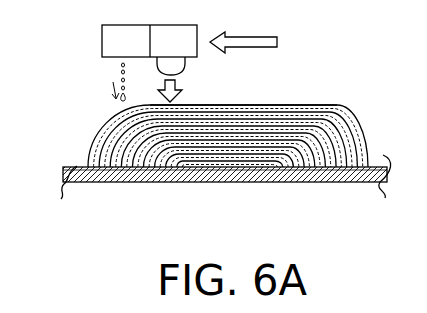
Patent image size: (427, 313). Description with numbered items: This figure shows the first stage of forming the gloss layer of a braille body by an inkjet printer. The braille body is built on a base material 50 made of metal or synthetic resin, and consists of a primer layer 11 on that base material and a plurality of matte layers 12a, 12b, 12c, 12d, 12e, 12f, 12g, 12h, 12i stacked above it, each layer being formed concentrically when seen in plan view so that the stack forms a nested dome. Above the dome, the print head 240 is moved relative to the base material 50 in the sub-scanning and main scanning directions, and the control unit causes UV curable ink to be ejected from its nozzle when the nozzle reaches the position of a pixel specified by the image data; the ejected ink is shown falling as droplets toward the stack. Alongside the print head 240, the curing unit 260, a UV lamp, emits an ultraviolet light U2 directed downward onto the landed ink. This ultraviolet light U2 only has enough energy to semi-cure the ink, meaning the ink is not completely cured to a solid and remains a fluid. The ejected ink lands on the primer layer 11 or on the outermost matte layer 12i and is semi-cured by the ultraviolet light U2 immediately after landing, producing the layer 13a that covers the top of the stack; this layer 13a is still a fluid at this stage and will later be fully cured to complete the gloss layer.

The print head 240 is at (102, 44).
The curing unit 260 is at (185, 65).
The ultraviolet light U2 is at (182, 96).
The layer 13a is at (275, 104).
The matte layer 12a is at (178, 168).
The matte layer 12b is at (160, 168).
The matte layer 12c is at (143, 168).
The matte layer 12d is at (123, 168).
The matte layer 12e is at (89, 160).
The matte layer 12f is at (95, 144).
The matte layer 12g is at (100, 133).
The matte layer 12h is at (105, 122).
The matte layer 12i is at (112, 112).
The primer layer 11 is at (238, 178).
The base material 50 is at (283, 181).